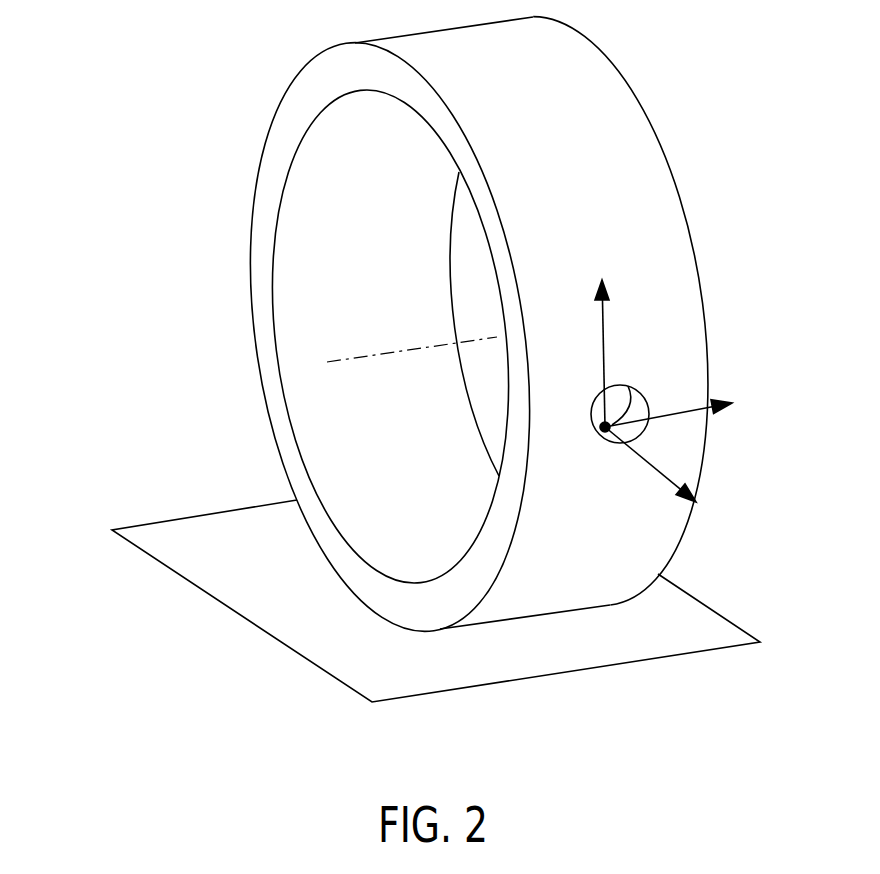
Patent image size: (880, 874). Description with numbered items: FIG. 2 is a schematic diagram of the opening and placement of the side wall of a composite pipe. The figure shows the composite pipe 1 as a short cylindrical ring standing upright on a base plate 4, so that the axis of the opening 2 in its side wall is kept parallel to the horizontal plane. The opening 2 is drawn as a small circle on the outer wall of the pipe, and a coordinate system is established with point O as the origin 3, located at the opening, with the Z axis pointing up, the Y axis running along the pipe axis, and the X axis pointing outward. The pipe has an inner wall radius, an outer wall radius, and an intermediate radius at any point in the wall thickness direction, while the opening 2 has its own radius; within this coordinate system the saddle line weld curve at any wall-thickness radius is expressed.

The annular ring body 1 is at (630, 186).
The sensor / measuring point 2 is at (637, 397).
The coordinate origin 3 is at (591, 411).
The base plate 4 is at (265, 593).